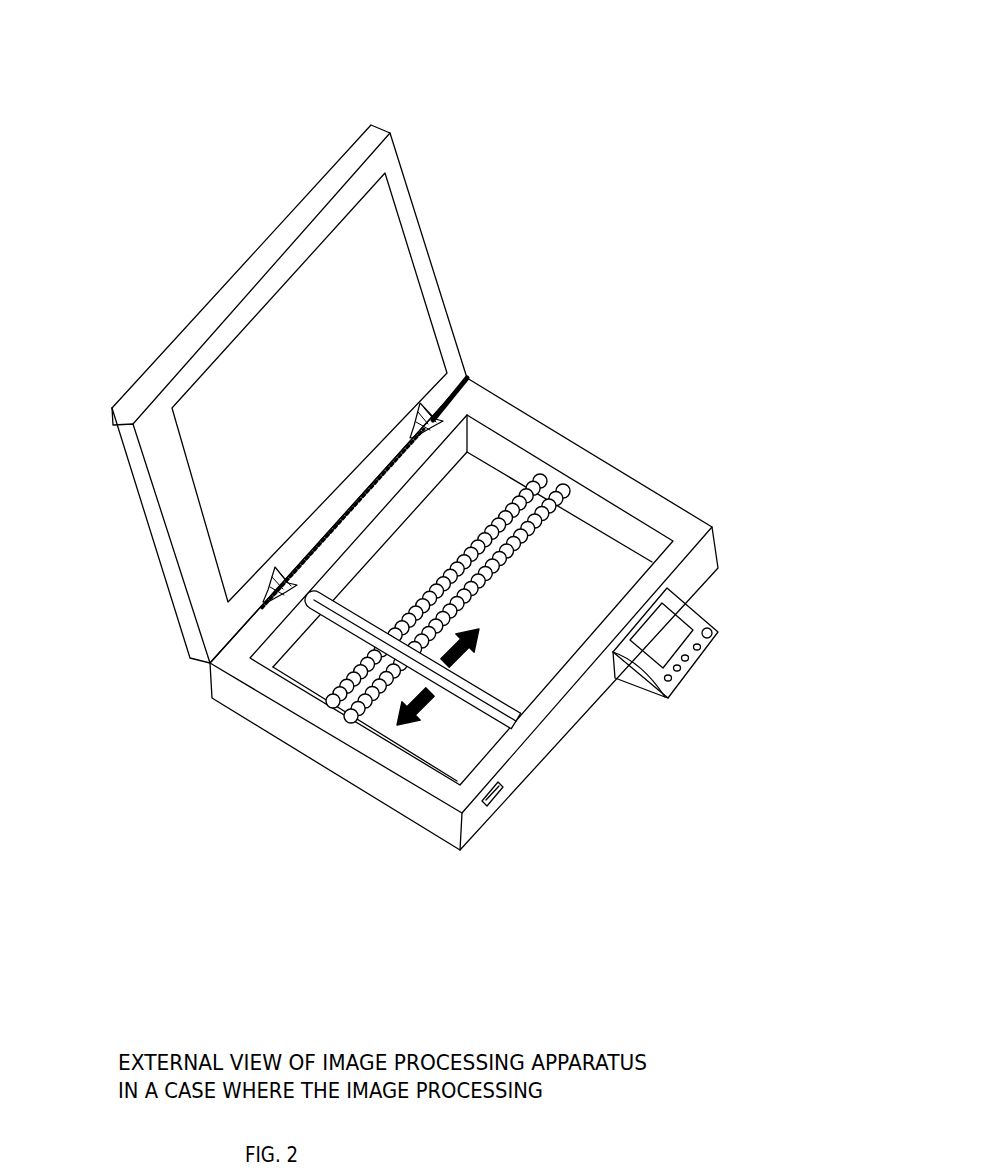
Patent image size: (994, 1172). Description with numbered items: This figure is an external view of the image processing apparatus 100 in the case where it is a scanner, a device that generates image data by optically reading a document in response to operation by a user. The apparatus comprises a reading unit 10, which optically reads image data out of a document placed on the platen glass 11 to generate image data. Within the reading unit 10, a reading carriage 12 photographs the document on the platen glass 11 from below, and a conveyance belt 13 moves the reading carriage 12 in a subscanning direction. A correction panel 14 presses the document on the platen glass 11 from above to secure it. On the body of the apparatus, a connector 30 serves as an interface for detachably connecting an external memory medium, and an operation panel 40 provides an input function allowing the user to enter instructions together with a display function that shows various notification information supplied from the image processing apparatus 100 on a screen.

The image processing apparatus 100 is at (562, 87).
The reading unit 10 is at (385, 768).
The platen glass 11 is at (597, 555).
The reading carriage 12 is at (505, 706).
The conveyance belt 13 is at (568, 497).
The correction panel 14 is at (397, 285).
The connector 30 is at (492, 817).
The operation panel 40 is at (710, 612).